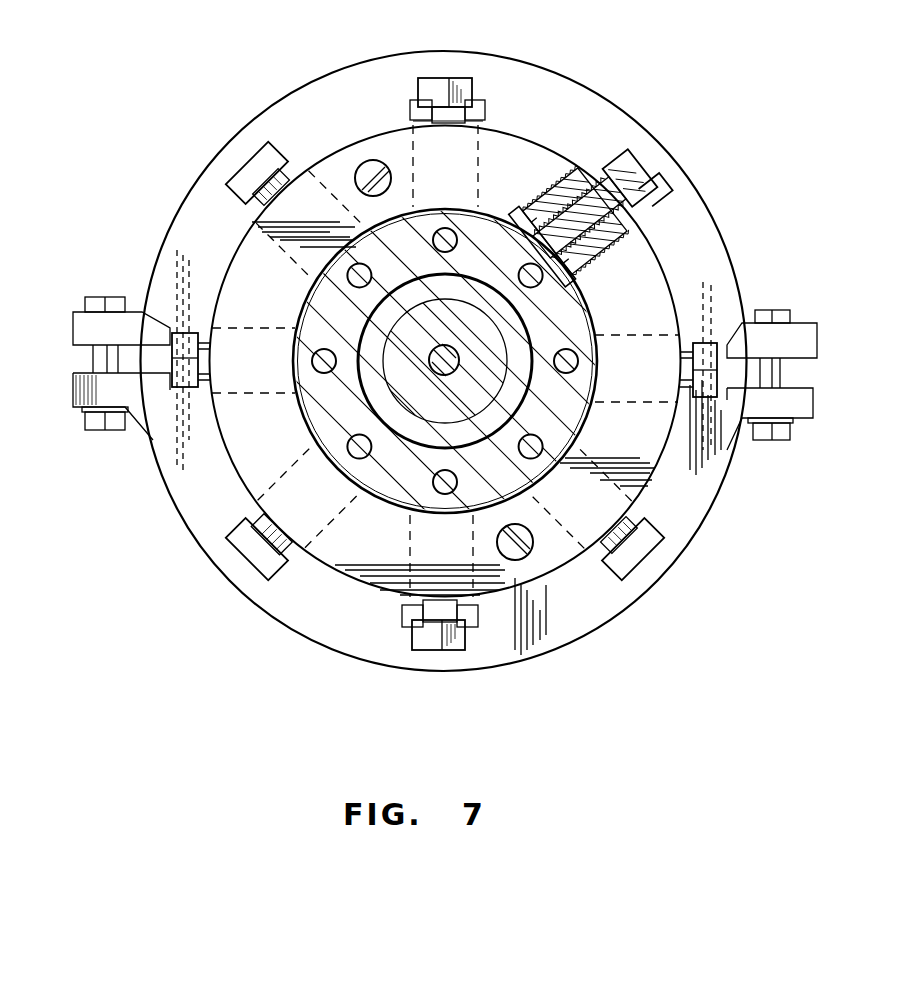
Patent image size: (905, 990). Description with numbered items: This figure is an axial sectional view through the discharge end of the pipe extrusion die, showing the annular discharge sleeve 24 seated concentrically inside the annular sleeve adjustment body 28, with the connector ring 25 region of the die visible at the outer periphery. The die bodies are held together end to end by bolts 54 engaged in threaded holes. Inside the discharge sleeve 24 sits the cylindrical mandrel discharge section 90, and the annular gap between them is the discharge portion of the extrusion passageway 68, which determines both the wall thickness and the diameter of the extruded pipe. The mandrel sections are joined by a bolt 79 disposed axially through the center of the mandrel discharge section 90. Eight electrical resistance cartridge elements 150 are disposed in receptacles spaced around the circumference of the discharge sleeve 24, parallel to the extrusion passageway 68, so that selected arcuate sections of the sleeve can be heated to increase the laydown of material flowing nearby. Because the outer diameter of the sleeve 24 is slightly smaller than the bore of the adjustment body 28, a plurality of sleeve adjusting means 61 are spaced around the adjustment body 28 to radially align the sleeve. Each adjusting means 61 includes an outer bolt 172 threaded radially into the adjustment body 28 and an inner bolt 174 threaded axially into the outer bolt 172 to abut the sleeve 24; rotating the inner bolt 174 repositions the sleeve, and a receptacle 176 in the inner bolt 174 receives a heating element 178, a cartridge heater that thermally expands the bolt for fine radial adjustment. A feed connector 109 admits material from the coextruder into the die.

The discharge sleeve 24 is at (393, 217).
The connector ring 25 is at (222, 152).
The sleeve adjustment body 28 is at (567, 560).
The bolts 54 is at (405, 537).
The sleeve adjusting means 61 is at (430, 78).
The extrusion passageway 68 is at (403, 420).
The bolt 79 is at (428, 362).
The mandrel discharge section 90 is at (460, 400).
The feed connector 109 is at (478, 93).
The electrical resistance cartridge elements 150 is at (343, 277).
The outer bolts 172 is at (413, 167).
The inner bolts 174 is at (588, 245).
The receptacle 176 is at (657, 193).
The heating element 178 is at (578, 273).